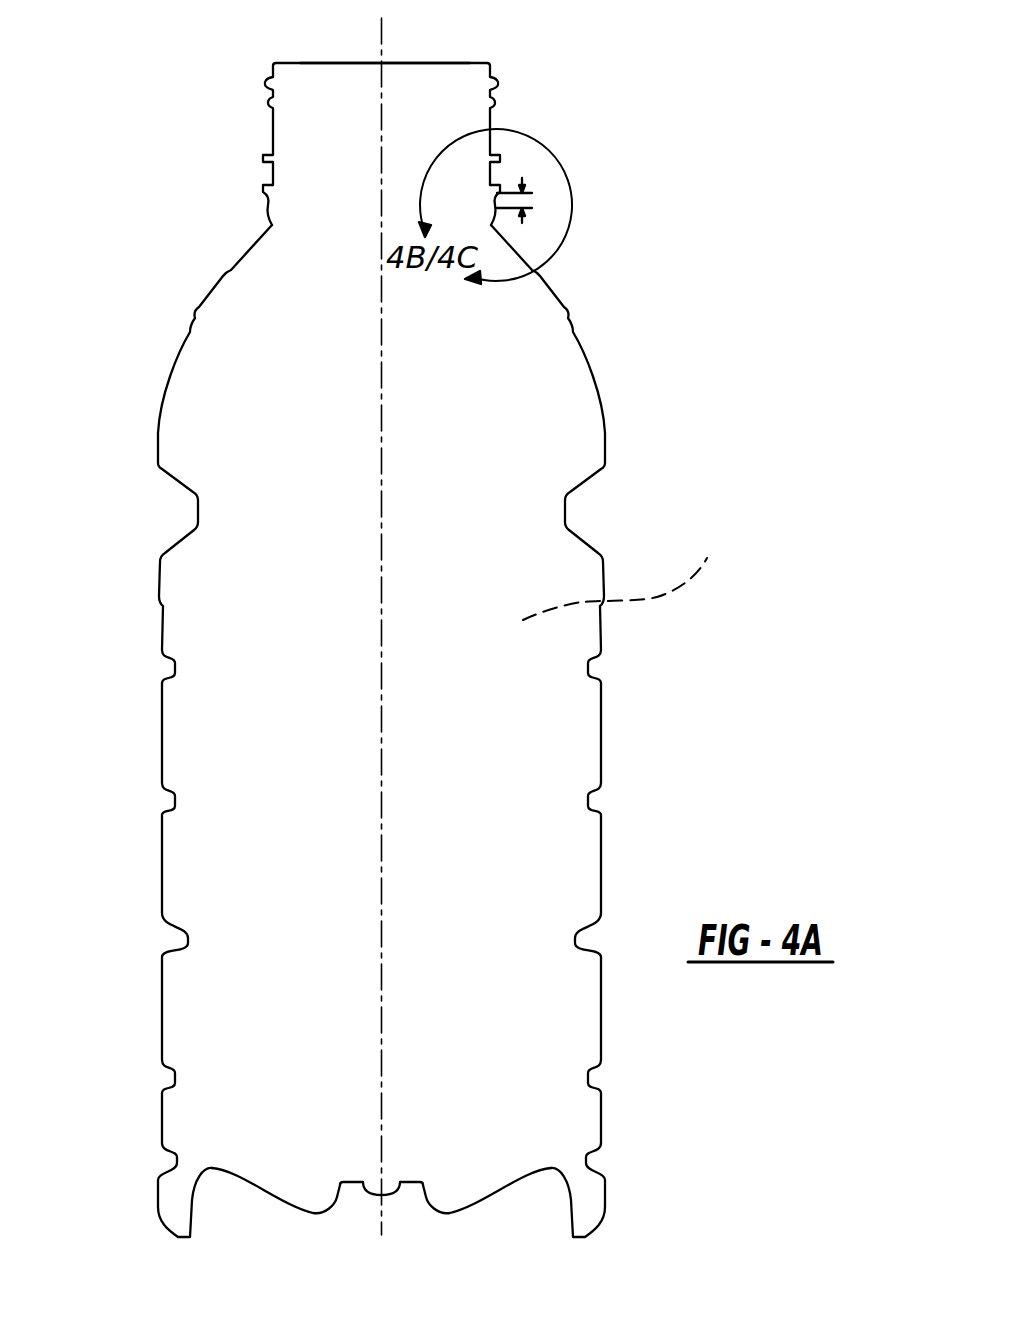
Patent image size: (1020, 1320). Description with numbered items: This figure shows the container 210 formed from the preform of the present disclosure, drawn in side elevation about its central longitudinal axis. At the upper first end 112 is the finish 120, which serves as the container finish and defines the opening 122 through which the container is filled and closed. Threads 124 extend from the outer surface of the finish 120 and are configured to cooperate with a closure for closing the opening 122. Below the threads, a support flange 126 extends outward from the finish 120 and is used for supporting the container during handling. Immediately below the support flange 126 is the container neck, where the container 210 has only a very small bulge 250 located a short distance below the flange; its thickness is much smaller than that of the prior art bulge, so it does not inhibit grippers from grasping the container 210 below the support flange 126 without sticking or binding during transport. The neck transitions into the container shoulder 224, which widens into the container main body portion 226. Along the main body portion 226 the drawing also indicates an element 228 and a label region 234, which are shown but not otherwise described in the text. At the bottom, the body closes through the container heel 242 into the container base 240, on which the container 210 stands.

The container 210 is at (96, 428).
The first end 112 is at (274, 61).
The finish 120 is at (271, 110).
The opening 122 is at (440, 62).
The threads 124 is at (497, 82).
The support flange 126 is at (263, 185).
The container shoulder 224 is at (190, 330).
The container main body portion 226 is at (160, 738).
The rib 228 is at (160, 882).
The label panel 234 is at (626, 574).
The container base 240 is at (447, 1213).
The container heel 242 is at (577, 1237).
The bulge 250 is at (493, 210).